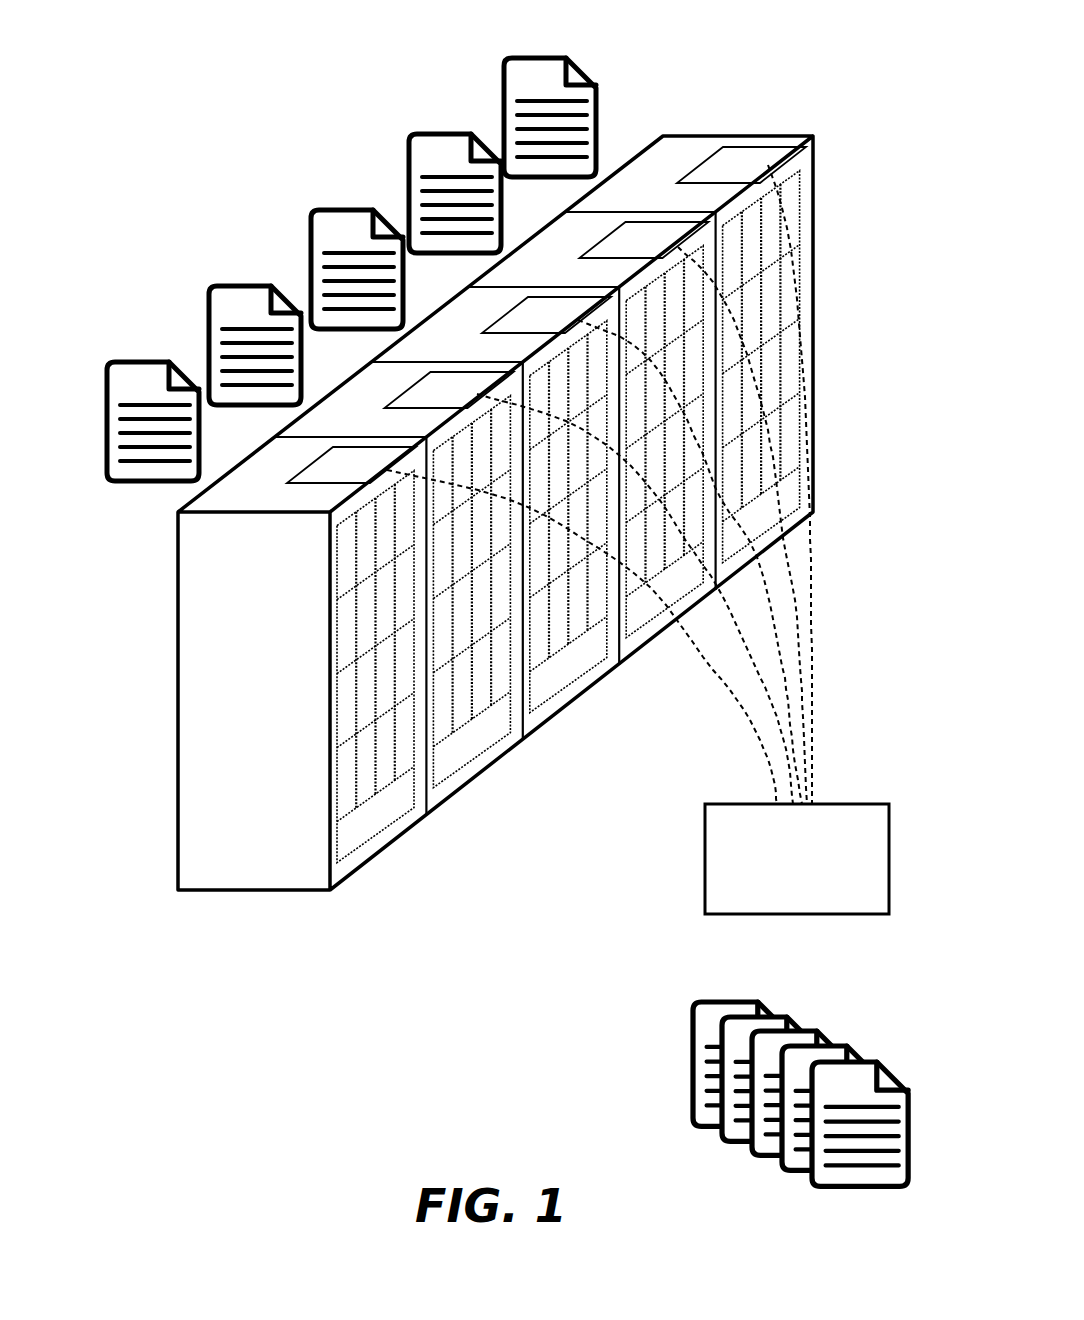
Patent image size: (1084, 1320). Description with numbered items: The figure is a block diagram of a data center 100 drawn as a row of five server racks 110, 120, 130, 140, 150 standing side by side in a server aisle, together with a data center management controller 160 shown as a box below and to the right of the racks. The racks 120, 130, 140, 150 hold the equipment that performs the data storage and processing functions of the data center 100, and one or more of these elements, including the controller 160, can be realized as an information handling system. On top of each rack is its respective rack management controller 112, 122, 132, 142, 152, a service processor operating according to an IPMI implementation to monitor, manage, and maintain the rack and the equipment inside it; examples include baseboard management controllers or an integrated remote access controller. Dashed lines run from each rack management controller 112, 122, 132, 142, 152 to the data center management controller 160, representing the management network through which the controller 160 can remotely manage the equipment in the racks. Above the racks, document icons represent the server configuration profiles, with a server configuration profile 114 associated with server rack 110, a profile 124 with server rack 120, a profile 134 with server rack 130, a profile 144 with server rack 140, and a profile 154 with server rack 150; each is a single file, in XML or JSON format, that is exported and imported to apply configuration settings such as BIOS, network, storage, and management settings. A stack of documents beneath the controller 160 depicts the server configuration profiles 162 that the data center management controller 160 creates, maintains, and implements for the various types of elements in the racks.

The data center 100 is at (184, 1108).
The server rack 110 is at (800, 25).
The rack management controller 112 is at (351, 465).
The server configuration profile 114 is at (113, 362).
The server rack 120 is at (393, 605).
The rack management controller 122 is at (449, 390).
The server configuration profile 124 is at (215, 286).
The server rack 130 is at (489, 530).
The rack management controller 132 is at (546, 315).
The server configuration profile 134 is at (318, 210).
The server rack 140 is at (585, 455).
The rack management controller 142 is at (644, 240).
The server configuration profile 144 is at (415, 134).
The server rack 150 is at (682, 380).
The rack management controller 152 is at (741, 165).
The server configuration profile 154 is at (510, 58).
The data center management controller 160 is at (712, 804).
The server configuration profiles 162 is at (703, 1002).